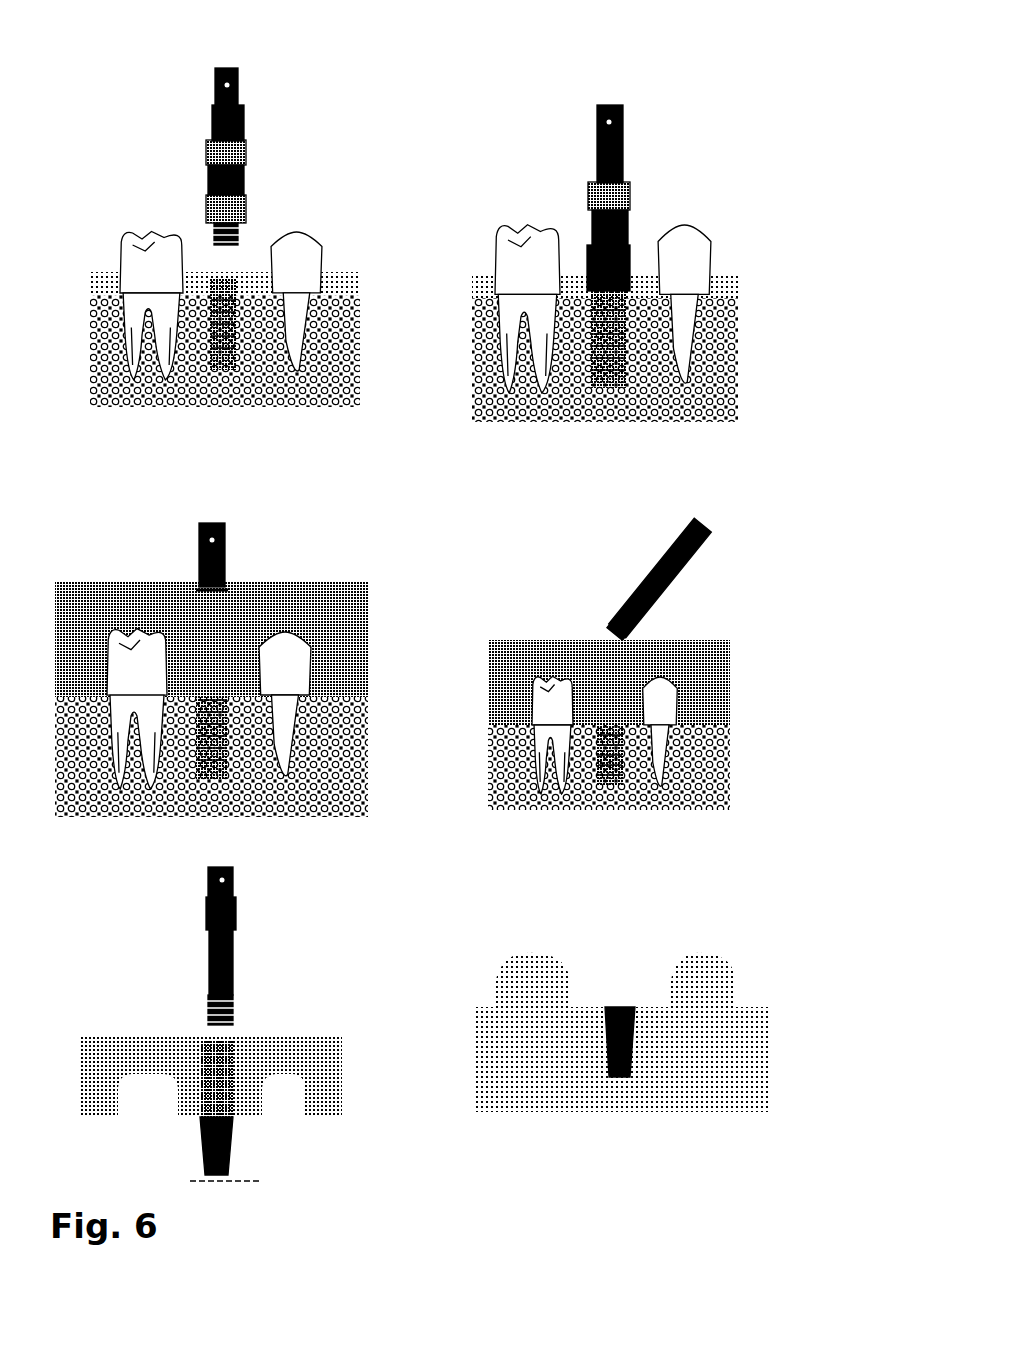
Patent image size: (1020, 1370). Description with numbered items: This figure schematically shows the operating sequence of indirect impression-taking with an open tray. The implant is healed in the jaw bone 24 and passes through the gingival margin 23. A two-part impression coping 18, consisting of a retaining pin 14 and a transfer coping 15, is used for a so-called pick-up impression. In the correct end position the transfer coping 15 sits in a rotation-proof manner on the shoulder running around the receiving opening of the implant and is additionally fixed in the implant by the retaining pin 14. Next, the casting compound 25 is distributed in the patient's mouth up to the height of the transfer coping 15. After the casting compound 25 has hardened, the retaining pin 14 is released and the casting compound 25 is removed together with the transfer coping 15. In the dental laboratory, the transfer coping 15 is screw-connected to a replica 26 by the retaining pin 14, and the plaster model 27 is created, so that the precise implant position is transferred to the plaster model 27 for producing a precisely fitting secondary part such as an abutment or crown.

The retaining pin 14 is at (183, 150).
The transfer coping 15 is at (183, 212).
The two-part impression coping 18 is at (253, 118).
The gingival margin 23 is at (323, 283).
The jaw bone 24 is at (217, 370).
The casting compound 25 is at (318, 623).
The replica 26 is at (223, 1182).
The plaster model 27 is at (705, 1063).